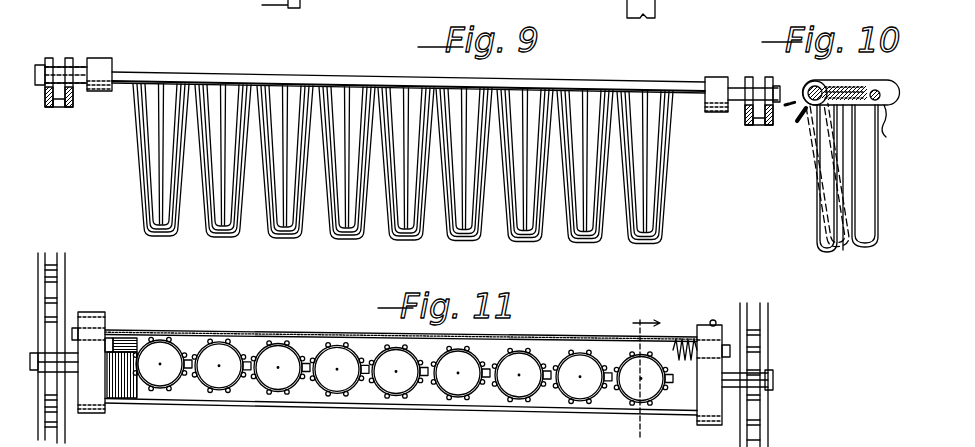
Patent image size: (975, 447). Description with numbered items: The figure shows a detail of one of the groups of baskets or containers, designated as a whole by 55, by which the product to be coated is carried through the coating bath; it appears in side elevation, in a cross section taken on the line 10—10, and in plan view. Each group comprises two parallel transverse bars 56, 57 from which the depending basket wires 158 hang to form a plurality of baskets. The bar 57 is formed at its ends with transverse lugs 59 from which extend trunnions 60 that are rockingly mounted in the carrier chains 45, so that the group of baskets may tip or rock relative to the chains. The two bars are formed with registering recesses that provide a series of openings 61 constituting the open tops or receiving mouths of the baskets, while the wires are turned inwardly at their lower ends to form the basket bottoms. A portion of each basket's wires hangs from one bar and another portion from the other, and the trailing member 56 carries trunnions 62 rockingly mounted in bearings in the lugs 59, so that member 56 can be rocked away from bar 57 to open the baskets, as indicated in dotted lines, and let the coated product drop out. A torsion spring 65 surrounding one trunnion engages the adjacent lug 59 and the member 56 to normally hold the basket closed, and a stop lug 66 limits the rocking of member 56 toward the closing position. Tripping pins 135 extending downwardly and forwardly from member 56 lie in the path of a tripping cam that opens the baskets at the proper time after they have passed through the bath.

In FIG. 11, the section line 10 is at (646, 368).
In FIG. 9, the carrier chains 45 is at (48, 107).
In FIG. 9, the group of baskets 55 is at (408, 62).
In FIG. 10, the transverse bar 56 is at (806, 86).
In FIG. 11, the transverse bar 56 is at (567, 345).
In FIG. 9, the transverse bar 57 is at (602, 74).
In FIG. 10, the transverse bar 57 is at (858, 177).
In FIG. 11, the transverse bar 57 is at (548, 410).
In FIG. 9, the transverse lugs 59 is at (103, 62).
In FIG. 10, the transverse lugs 59 is at (860, 72).
In FIG. 11, the transverse lugs 59 is at (92, 314).
In FIG. 9, the trunnions 60 is at (78, 65).
In FIG. 11, the trunnions 60 is at (47, 388).
In FIG. 11, the openings 61 is at (400, 386).
In FIG. 11, the trunnions 62 is at (75, 330).
In FIG. 11, the torsion spring 65 is at (681, 332).
In FIG. 11, the stop lug 66 is at (130, 404).
In FIG. 10, the tripping pins 135 is at (797, 121).
In FIG. 11, the tripping pins 135 is at (711, 320).
In FIG. 9, the tube loops 158 is at (668, 193).